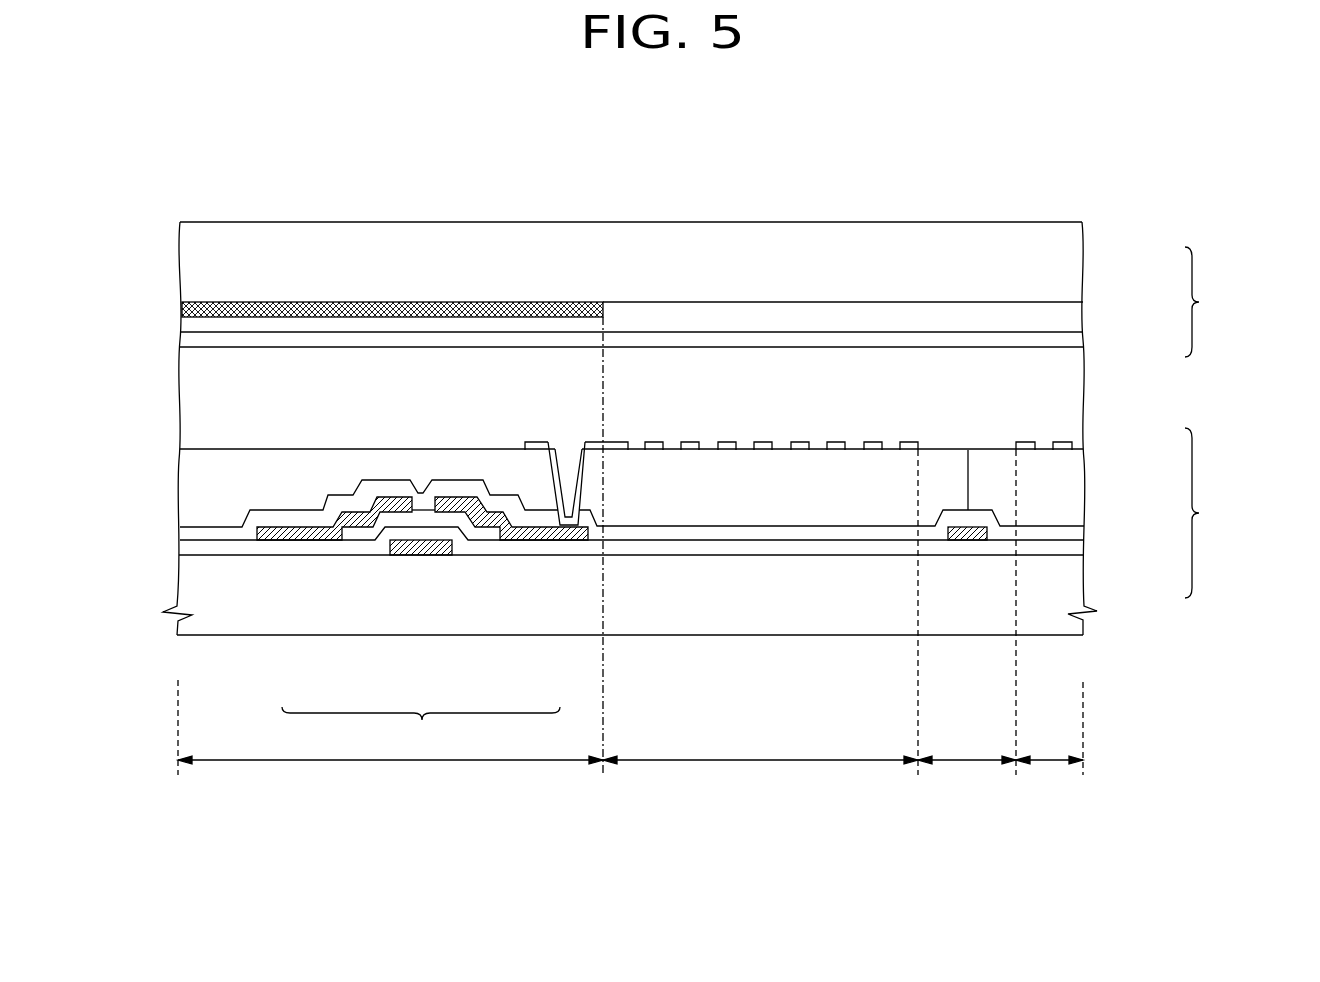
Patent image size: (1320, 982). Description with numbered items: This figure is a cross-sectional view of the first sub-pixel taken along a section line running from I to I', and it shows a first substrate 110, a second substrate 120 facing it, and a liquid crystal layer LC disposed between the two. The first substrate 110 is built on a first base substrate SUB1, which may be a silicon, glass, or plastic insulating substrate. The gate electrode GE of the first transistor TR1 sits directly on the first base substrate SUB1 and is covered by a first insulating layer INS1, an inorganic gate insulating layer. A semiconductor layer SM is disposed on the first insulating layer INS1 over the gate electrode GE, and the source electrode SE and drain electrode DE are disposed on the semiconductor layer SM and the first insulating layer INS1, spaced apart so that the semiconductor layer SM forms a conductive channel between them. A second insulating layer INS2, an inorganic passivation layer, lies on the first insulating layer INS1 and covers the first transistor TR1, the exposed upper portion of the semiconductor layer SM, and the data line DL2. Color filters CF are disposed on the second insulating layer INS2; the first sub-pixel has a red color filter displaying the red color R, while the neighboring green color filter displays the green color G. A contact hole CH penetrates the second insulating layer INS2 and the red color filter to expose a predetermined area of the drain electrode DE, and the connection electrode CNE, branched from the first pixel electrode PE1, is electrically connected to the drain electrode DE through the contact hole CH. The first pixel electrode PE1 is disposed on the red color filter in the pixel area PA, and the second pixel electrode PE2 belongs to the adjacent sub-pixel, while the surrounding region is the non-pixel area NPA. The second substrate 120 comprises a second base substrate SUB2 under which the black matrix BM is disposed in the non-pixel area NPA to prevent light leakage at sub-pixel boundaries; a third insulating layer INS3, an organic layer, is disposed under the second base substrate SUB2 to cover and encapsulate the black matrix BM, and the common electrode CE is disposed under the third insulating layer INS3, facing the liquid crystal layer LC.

The black matrix BM is at (388, 302).
The second base substrate SUB2 is at (1070, 263).
The third insulating layer INS3 is at (1070, 318).
The common electrode CE is at (1070, 343).
The second substrate 120 is at (1215, 302).
The liquid crystal layer LC is at (1070, 400).
The second pixel electrode PE2 is at (1070, 447).
The first pixel electrode PE1 is at (873, 442).
The color filters CF is at (1070, 488).
The red color R is at (760, 486).
The green color G is at (1048, 486).
The contact hole CH is at (567, 452).
The connection electrode CNE is at (593, 442).
The second insulating layer INS2 is at (1070, 535).
The first insulating layer INS1 is at (1070, 560).
The first base substrate SUB1 is at (1070, 586).
The first substrate 110 is at (1215, 513).
The source electrode SE is at (295, 543).
The gate electrode GE is at (421, 548).
The semiconductor layer SM is at (484, 534).
The drain electrode DE is at (545, 541).
The first transistor TR1 is at (421, 730).
The data line DL2 is at (962, 542).
The section line start I is at (177, 709).
The section line end I' is at (1086, 708).
The non-pixel area NPA is at (597, 777).
The pixel area PA is at (843, 777).